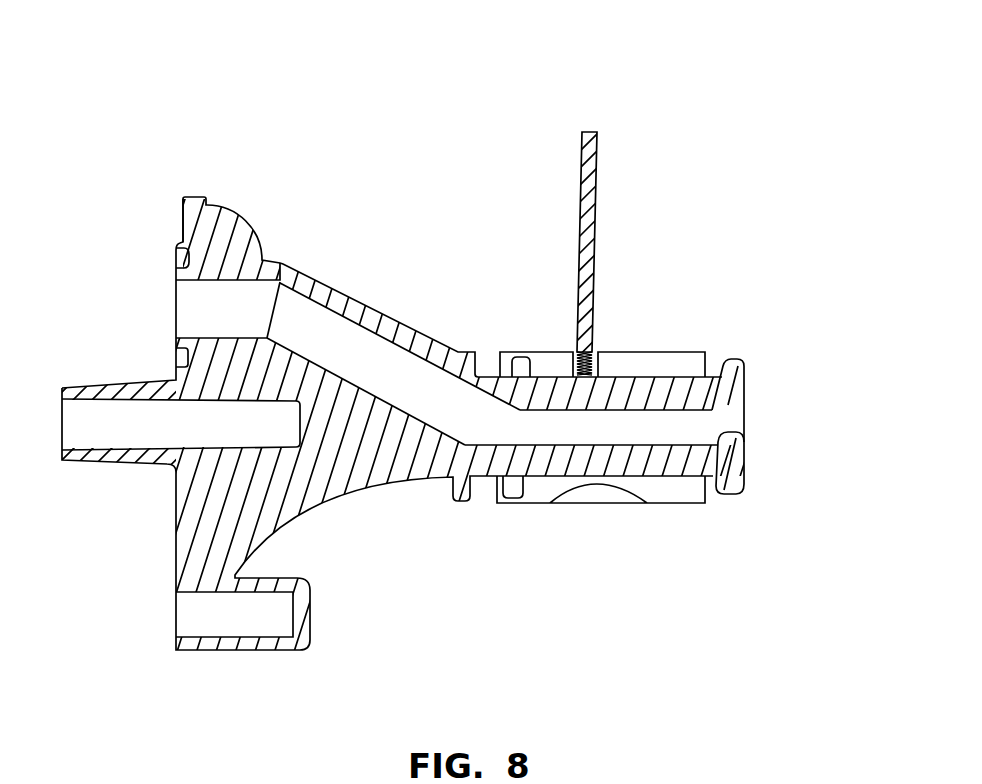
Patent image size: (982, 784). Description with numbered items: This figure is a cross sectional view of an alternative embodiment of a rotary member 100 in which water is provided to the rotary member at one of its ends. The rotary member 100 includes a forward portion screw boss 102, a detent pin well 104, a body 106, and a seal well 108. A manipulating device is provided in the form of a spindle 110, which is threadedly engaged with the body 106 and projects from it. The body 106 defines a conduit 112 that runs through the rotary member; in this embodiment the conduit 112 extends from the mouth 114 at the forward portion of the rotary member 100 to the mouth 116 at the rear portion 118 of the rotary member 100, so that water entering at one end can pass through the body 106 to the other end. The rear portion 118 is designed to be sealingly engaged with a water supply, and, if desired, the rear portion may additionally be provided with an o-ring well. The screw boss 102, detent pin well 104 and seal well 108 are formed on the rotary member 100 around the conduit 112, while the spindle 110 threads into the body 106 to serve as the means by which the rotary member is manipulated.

The rotary member 100 is at (747, 137).
The forward portion screw boss 102 is at (98, 466).
The detent pin well 104 is at (229, 637).
The body 106 is at (408, 327).
The seal well 108 is at (177, 262).
The spindle 110 is at (597, 160).
The conduit 112 is at (303, 293).
The mouth 114 is at (176, 297).
The mouth 116 is at (733, 433).
The rear portion 118 is at (747, 372).